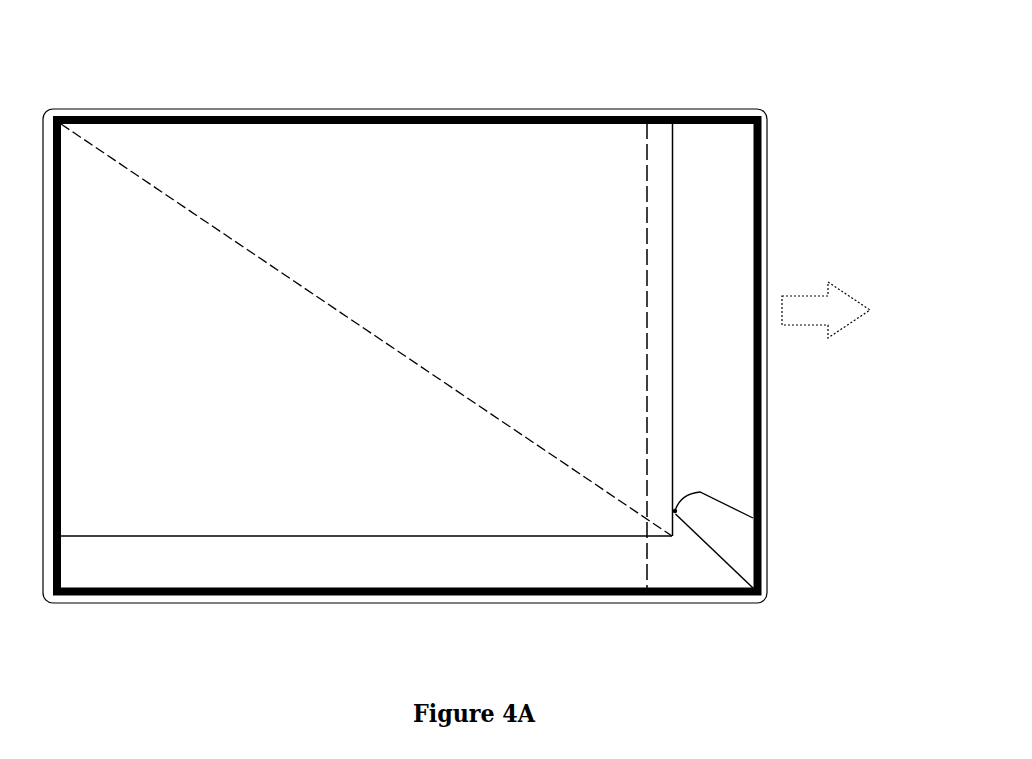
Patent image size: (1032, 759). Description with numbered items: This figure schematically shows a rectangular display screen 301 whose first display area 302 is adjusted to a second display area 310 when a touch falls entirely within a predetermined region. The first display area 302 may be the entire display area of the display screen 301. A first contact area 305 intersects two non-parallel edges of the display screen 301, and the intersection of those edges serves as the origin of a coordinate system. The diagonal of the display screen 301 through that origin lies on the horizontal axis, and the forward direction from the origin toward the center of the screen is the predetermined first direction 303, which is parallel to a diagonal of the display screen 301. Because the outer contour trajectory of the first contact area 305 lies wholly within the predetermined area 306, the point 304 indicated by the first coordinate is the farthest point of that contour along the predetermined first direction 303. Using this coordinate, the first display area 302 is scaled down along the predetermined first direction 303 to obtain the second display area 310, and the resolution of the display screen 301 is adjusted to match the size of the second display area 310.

The display screen 301 is at (843, 310).
The first display area 302 is at (327, 485).
The predetermined first direction 303 is at (128, 163).
The point indicated by the first coordinate 304 is at (675, 511).
The first contact area 305 is at (700, 492).
The predetermined area 306 is at (663, 138).
The second display area 310 is at (663, 188).